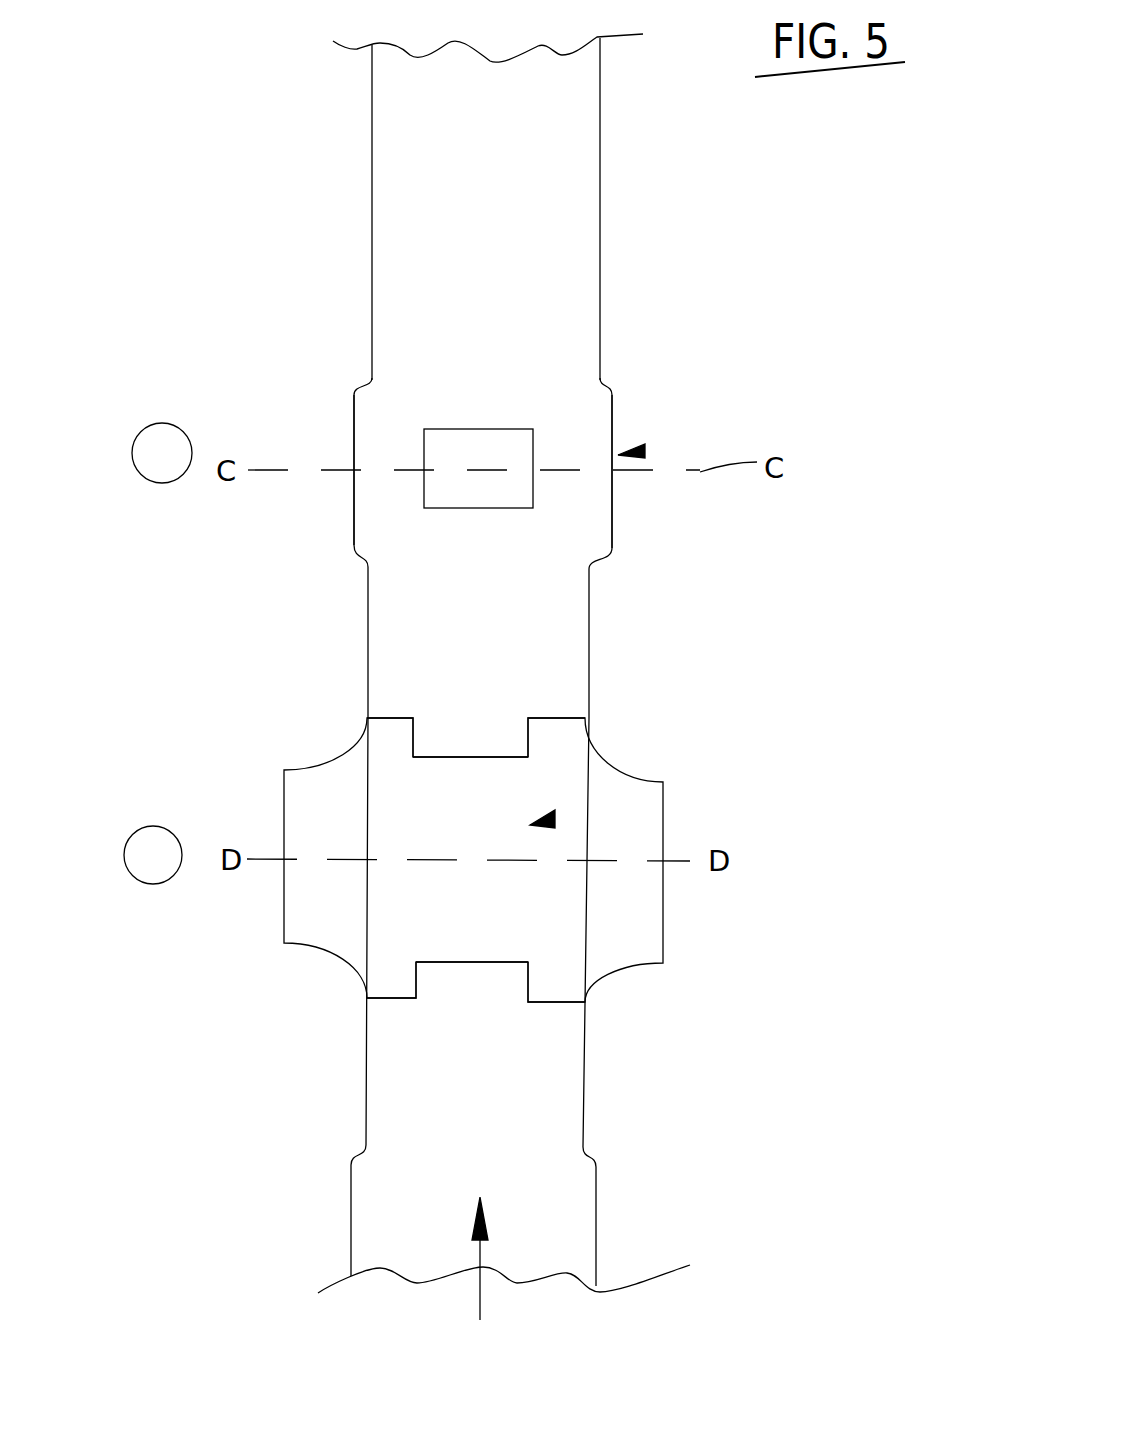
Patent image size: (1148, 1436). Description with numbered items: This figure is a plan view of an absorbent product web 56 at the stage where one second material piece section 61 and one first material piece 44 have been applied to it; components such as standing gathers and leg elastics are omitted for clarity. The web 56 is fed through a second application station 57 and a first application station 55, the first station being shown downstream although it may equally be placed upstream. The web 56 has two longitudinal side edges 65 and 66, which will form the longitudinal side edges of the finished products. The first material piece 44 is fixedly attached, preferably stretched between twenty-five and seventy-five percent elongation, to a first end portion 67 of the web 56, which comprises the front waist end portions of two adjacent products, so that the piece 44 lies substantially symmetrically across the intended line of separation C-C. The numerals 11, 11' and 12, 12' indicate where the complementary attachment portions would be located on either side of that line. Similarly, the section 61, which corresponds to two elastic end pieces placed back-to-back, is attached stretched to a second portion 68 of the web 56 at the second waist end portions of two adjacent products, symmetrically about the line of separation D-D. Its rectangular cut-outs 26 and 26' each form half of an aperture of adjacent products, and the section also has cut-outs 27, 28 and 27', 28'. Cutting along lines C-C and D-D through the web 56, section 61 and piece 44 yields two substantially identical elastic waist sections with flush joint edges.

The absorbent product web 56 is at (540, 230).
The longitudinal side edge 65 is at (598, 282).
The longitudinal side edge 66 is at (372, 268).
The first material piece 44 is at (512, 446).
The complementary attachment portion 11 is at (703, 403).
The complementary attachment portion 11' is at (693, 525).
The complementary attachment portion 12 is at (303, 431).
The complementary attachment portion 12' is at (299, 528).
The first end portion 67 is at (645, 451).
The first application station 55 is at (162, 453).
The second application station 57 is at (153, 855).
The second material piece section 61 is at (642, 833).
The second portion 68 is at (553, 812).
The rectangular cut-out 26 is at (396, 1059).
The lower right tab 27 is at (646, 1029).
The lower left tab 28 is at (337, 1031).
The rectangular cut-out 26' is at (559, 674).
The upper right tab 27' is at (616, 698).
The upper left tab 28' is at (334, 710).